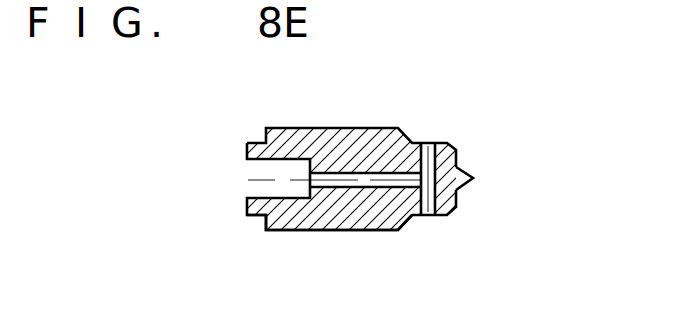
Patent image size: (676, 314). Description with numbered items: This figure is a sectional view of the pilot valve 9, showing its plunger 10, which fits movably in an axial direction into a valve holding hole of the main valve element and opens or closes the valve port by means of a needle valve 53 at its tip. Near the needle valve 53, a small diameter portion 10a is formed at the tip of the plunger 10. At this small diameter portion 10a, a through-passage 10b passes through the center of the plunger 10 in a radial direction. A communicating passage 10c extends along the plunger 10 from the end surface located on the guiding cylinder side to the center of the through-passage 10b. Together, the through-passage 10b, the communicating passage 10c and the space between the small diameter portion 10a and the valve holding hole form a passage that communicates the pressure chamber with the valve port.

The pilot valve 9 is at (301, 230).
The plunger 10 is at (370, 128).
The small diameter portion 10a is at (443, 143).
The through-passage 10b is at (428, 214).
The communicating passage 10c is at (333, 175).
The needle valve 53 is at (473, 178).